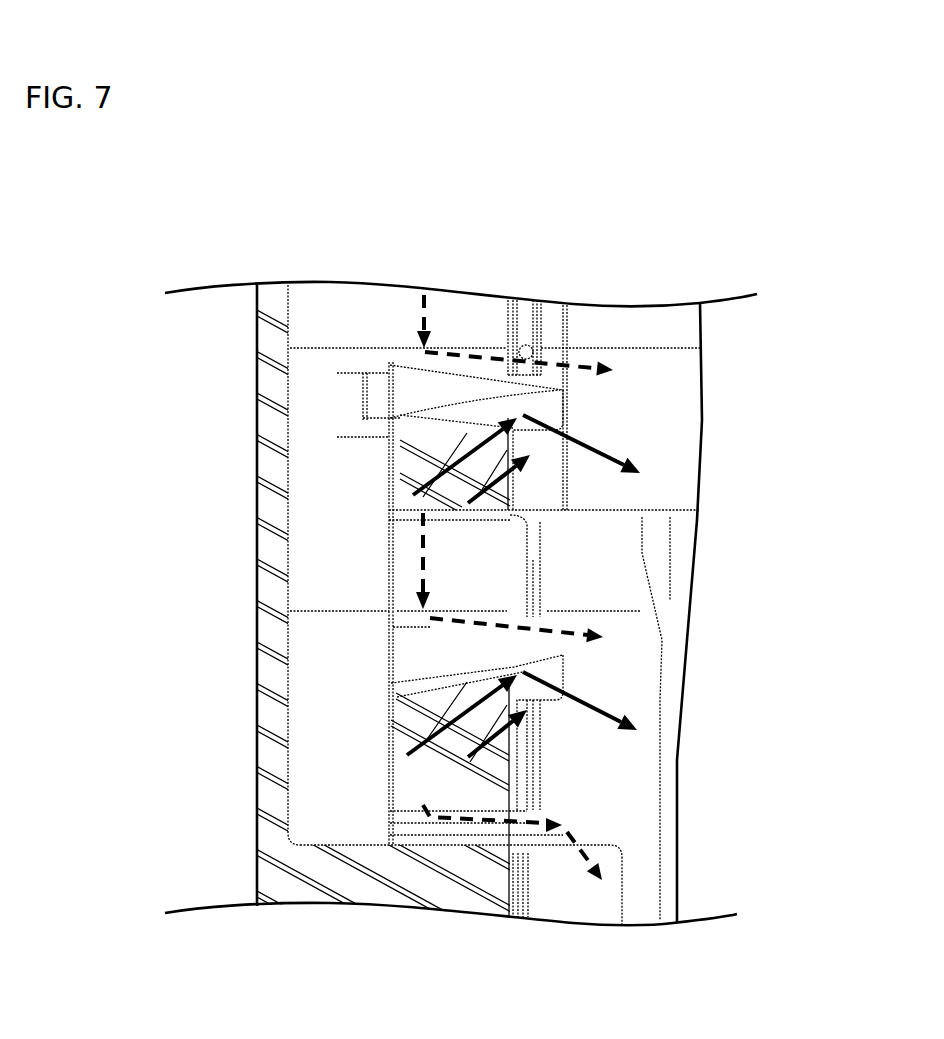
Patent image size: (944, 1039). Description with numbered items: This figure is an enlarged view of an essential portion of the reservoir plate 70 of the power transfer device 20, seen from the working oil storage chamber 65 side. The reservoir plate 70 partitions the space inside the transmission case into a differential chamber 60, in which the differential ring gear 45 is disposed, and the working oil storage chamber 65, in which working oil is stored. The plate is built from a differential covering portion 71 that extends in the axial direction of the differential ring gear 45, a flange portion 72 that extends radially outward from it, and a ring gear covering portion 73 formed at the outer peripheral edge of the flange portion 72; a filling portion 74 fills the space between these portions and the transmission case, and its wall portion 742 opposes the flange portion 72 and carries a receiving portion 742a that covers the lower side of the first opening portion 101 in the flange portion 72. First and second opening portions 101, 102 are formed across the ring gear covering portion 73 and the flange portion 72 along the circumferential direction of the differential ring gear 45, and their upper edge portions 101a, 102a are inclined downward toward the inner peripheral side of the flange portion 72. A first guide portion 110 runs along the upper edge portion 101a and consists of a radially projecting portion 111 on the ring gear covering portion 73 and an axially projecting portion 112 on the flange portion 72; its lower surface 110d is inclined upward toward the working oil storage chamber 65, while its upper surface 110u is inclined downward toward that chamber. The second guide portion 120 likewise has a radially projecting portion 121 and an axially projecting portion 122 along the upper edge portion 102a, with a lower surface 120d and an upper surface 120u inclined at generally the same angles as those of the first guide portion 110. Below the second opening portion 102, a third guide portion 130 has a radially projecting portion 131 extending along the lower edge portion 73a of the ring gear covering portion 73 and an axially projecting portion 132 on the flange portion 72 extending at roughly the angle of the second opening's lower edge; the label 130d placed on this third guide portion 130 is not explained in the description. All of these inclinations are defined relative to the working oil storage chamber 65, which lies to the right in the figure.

The power transfer device 20 is at (198, 242).
The reservoir plate 70 is at (273, 272).
The differential covering portion 71 is at (677, 377).
The flange portion 72 is at (512, 332).
The ring gear covering portion 73 is at (322, 331).
The lower edge portion 73a is at (312, 845).
The filling portion 74 is at (677, 545).
The wall portion 742 is at (608, 773).
The receiving portion 742a is at (608, 568).
The differential ring gear 45 is at (273, 627).
The differential chamber 60 is at (228, 853).
The working oil storage chamber 65 is at (657, 862).
The first opening portion 101 is at (390, 513).
The upper edge portion of the first opening portion 101a is at (403, 500).
The second opening portion 102 is at (397, 772).
The upper edge portion of the second opening portion 102a is at (440, 727).
The first guide portion 110 is at (623, 435).
The radially projecting portion 111 is at (467, 392).
The axially projecting portion 112 is at (567, 418).
The upper surface of the first guide portion 110u is at (421, 366).
The lower surface of the first guide portion 110d is at (447, 418).
The second guide portion 120 is at (624, 768).
The radially projecting portion 121 is at (458, 657).
The axially projecting portion 122 is at (565, 680).
The upper surface of the second guide portion 120u is at (423, 625).
The lower surface of the second guide portion 120d is at (450, 682).
The third guide portion 130 is at (454, 911).
The radially projecting portion 131 is at (480, 843).
The axially projecting portion 132 is at (553, 837).
The bottom flow guide lower end 130d is at (437, 828).